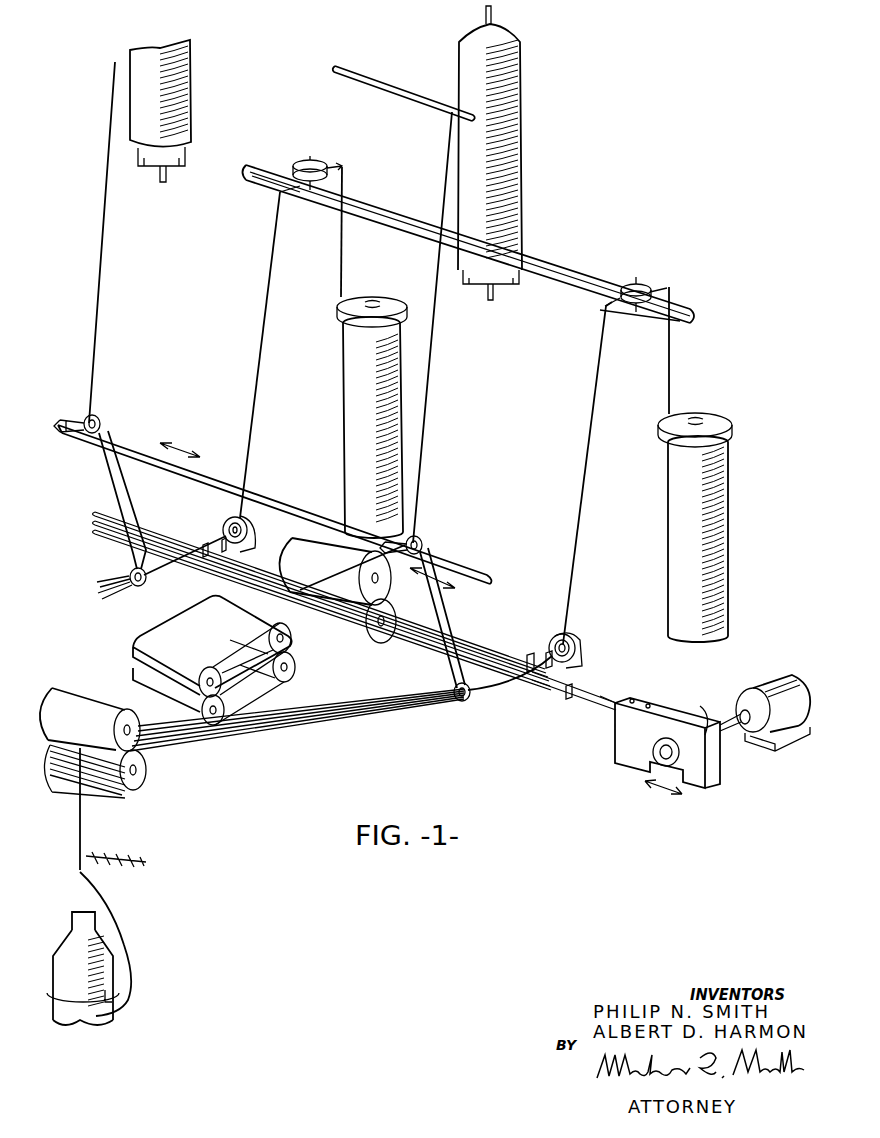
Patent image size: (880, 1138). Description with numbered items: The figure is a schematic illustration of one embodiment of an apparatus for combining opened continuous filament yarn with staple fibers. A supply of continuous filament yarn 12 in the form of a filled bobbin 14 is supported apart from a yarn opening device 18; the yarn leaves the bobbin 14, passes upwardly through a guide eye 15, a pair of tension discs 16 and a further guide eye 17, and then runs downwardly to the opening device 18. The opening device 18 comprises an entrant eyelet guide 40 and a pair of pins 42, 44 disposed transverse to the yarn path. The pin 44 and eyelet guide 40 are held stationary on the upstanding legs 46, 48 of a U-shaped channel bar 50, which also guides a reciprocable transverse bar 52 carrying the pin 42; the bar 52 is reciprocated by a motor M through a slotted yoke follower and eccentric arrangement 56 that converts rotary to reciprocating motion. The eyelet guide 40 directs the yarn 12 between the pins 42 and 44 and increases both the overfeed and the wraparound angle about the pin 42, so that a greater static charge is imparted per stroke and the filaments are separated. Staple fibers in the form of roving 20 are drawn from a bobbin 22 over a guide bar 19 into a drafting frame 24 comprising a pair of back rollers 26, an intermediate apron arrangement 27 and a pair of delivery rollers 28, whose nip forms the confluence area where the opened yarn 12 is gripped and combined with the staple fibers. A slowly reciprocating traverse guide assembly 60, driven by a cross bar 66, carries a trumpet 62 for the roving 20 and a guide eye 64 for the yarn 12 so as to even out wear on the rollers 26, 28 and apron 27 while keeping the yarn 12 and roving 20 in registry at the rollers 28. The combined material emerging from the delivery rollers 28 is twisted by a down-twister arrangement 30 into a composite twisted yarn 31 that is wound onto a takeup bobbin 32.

The continuous filament yarn 12 is at (580, 468).
The filled bobbin 14 is at (343, 402).
The guide eye 15 is at (672, 288).
The tension discs 16 is at (625, 280).
The guide eye 17 is at (606, 306).
The yarn opening device 18 is at (550, 705).
The guide bar 19 is at (375, 78).
The roving 20 is at (100, 316).
The bobbin 22 is at (192, 64).
The drafting frame 24 is at (310, 676).
The back rollers 26 is at (393, 600).
The intermediate apron arrangement 27 is at (208, 650).
The front or delivery rollers 28 is at (158, 762).
The down-twister arrangement 30 is at (65, 915).
The composite twisted yarn 31 is at (118, 905).
The takeup bobbin 32 is at (115, 1010).
The entrant eyelet guide 40 is at (574, 636).
The pin 42 is at (572, 664).
The pin 44 is at (530, 653).
The upstanding leg 46 is at (487, 648).
The upstanding leg 48 is at (546, 684).
The U-shaped channel bar 50 is at (578, 703).
The transverse bar 52 is at (612, 700).
The slotted yoke follower and eccentric arrangement 56 is at (730, 773).
The traverse guide assembly 60 is at (466, 613).
The trumpet 62 is at (100, 415).
The guide eye 64 is at (137, 586).
The cross bar 66 is at (283, 505).
The motor M is at (772, 678).